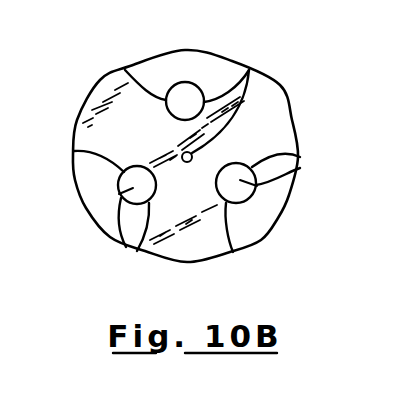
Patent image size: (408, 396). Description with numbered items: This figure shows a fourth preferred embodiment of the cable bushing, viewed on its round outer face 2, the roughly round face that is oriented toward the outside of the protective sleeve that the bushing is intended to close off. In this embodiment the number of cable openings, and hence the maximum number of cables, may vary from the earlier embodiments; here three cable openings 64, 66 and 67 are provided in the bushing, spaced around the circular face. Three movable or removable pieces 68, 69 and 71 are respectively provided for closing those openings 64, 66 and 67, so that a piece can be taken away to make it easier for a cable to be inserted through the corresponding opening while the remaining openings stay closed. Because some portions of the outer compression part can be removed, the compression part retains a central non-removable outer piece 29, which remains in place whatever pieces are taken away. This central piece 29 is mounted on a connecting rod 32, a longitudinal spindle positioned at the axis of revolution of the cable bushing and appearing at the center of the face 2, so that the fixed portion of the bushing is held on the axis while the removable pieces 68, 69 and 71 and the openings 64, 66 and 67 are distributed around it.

The round outer face 2 is at (101, 85).
The central non-removable outer piece 29 is at (268, 123).
The connecting rod 32 is at (282, 92).
The cable opening 64 is at (188, 97).
The cable opening 66 is at (300, 168).
The cable opening 67 is at (116, 233).
The removable piece 68 is at (157, 74).
The removable piece 69 is at (255, 215).
The removable piece 71 is at (88, 184).